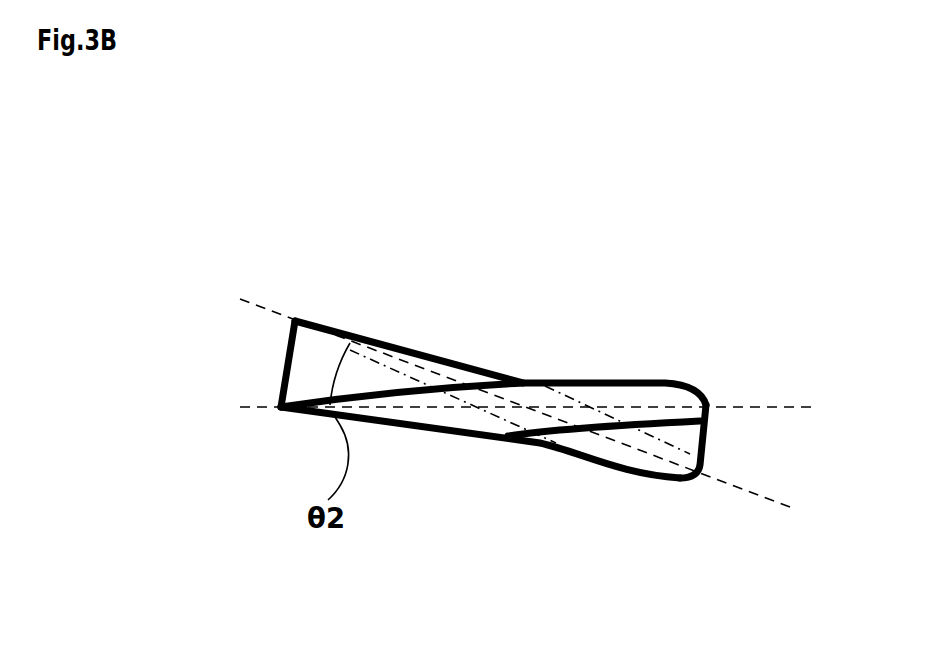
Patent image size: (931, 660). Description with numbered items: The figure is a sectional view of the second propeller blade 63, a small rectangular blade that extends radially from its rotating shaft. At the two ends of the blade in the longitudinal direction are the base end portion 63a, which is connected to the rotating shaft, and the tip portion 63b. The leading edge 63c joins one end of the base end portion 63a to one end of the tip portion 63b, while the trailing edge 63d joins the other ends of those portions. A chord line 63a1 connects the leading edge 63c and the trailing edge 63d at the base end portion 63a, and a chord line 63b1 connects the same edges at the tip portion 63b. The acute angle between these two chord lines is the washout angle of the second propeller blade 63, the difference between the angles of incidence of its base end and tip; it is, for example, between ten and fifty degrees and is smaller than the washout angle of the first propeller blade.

The second propeller blade 63 is at (474, 303).
The base end portion 63a is at (622, 380).
The chord line 63a1 is at (762, 404).
The tip portion 63b is at (620, 480).
The chord line 63b1 is at (748, 492).
The leading edge 63c is at (707, 430).
The trailing edge 63d is at (287, 360).